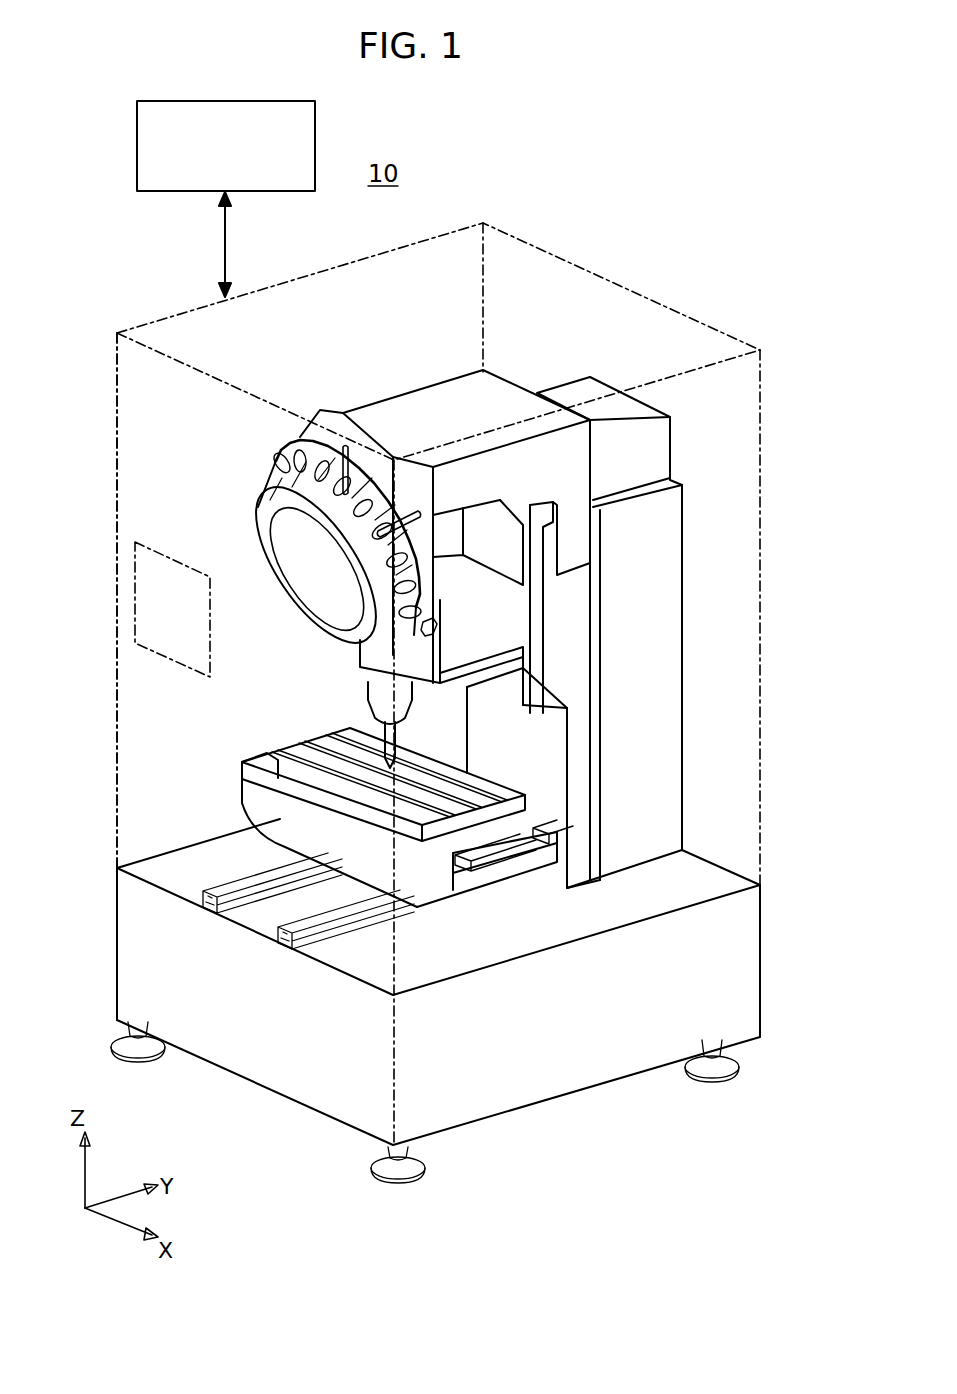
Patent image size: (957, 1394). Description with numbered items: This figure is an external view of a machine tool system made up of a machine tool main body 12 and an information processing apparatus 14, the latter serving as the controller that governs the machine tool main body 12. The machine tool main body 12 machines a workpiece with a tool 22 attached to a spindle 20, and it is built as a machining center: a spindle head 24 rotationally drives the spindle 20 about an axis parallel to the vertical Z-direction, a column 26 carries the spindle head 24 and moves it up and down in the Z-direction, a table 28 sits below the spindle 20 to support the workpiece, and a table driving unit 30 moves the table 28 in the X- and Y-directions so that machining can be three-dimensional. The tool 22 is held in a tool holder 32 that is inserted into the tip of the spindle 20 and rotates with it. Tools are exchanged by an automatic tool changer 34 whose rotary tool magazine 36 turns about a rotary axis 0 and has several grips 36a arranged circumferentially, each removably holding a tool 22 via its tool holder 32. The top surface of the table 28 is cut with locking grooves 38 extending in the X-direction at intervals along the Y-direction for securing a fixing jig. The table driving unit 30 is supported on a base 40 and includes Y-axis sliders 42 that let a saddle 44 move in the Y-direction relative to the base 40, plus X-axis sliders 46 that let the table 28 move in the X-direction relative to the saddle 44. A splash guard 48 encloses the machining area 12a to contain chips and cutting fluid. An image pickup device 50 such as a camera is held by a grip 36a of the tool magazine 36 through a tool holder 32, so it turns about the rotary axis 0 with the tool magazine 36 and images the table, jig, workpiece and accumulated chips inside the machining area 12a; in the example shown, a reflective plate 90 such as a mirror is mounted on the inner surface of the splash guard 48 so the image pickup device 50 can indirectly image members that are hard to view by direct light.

The rotary axis 0 is at (318, 568).
The machine tool main body 12 is at (612, 266).
The machining area 12a is at (148, 492).
The information processing apparatus 14 is at (212, 101).
The spindle 20 is at (380, 707).
The tool 22 is at (370, 432).
The spindle head 24 is at (365, 652).
The column 26 is at (570, 618).
The table 28 is at (520, 808).
The table driving unit 30 is at (232, 772).
The tool holder 32 is at (315, 565).
The automatic tool changer 34 is at (252, 477).
The tool magazine 36 is at (282, 540).
The grip 36a is at (395, 500).
The locking groove 38 is at (450, 785).
The base 40 is at (215, 1040).
The Y-axis slider 42 is at (285, 948).
The saddle 44 is at (262, 800).
The X-axis slider 46 is at (545, 860).
The splash guard 48 is at (540, 242).
The image pickup device 50 is at (440, 624).
The reflective plate 90 is at (148, 604).